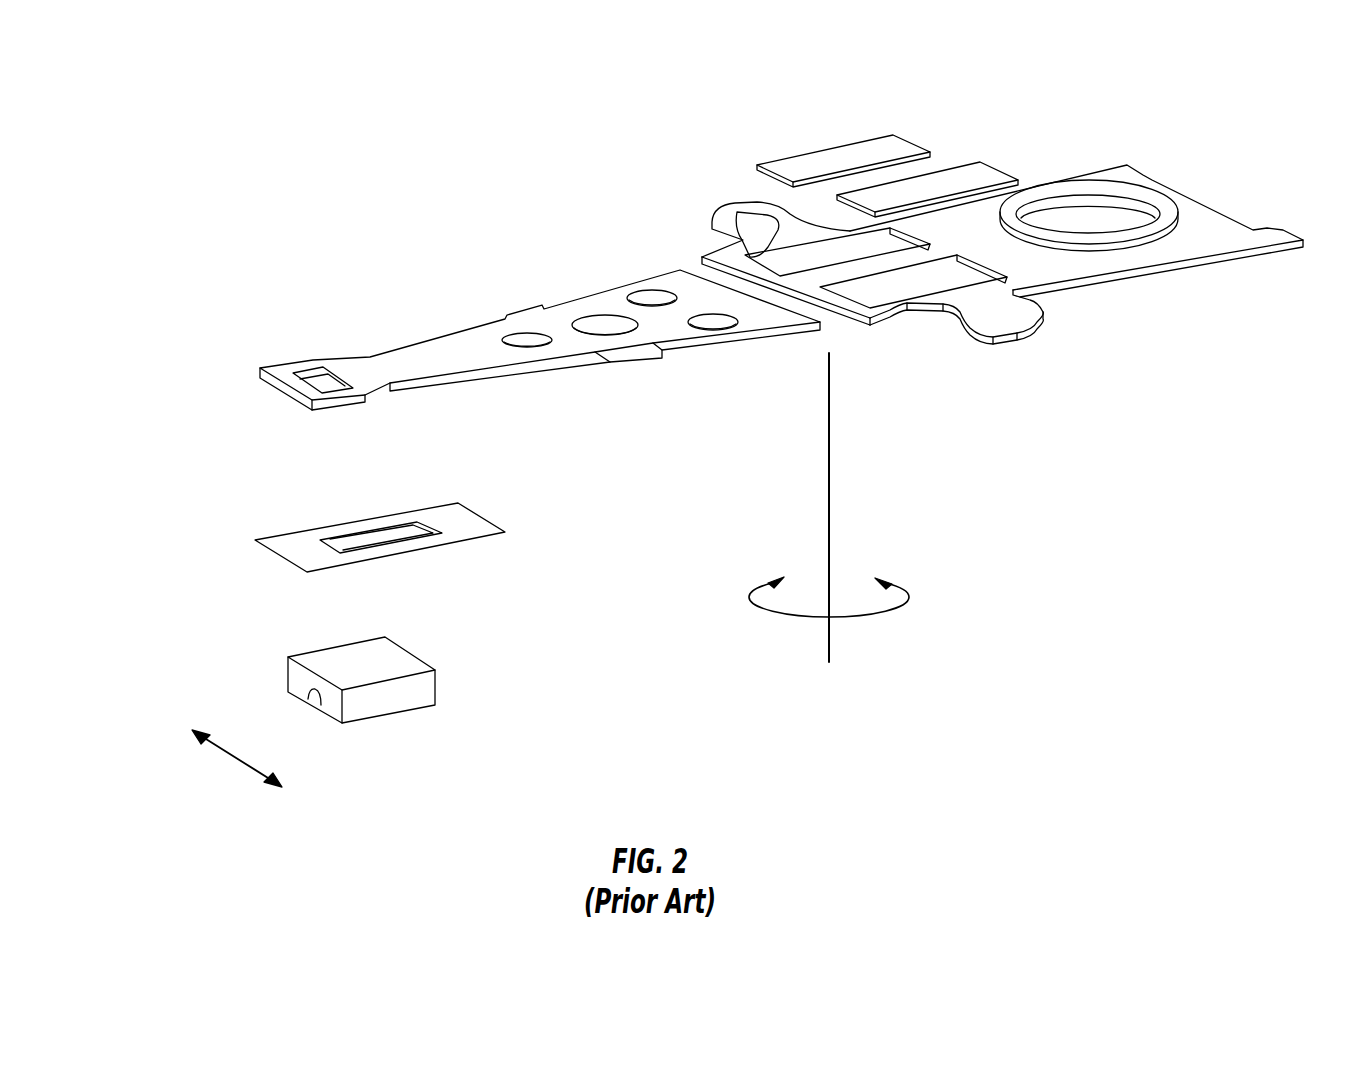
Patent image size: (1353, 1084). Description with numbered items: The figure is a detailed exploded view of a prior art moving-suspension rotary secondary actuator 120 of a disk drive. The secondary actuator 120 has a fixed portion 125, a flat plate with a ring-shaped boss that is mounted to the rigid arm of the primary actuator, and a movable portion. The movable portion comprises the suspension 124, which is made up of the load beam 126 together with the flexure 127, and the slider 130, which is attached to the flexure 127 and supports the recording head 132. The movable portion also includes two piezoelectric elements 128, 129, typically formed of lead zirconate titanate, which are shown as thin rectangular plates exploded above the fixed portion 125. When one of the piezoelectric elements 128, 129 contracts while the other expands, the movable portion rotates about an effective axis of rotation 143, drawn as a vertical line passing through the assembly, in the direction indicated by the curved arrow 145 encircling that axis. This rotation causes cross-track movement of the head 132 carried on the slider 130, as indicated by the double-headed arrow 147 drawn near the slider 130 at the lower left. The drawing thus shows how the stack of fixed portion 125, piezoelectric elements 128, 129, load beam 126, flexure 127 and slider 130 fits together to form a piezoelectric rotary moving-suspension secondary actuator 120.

The secondary actuator 120 is at (258, 192).
The suspension 124 is at (230, 348).
The fixed portion 125 is at (1198, 212).
The load beam 126 is at (542, 308).
The flexure 127 is at (330, 532).
The piezoelectric element 128 is at (782, 165).
The piezoelectric element 129 is at (993, 178).
The slider 130 is at (400, 653).
The recording head 132 is at (313, 708).
The effective axis of rotation 143 is at (830, 442).
The arrow 145 is at (905, 595).
The arrow 147 is at (242, 767).